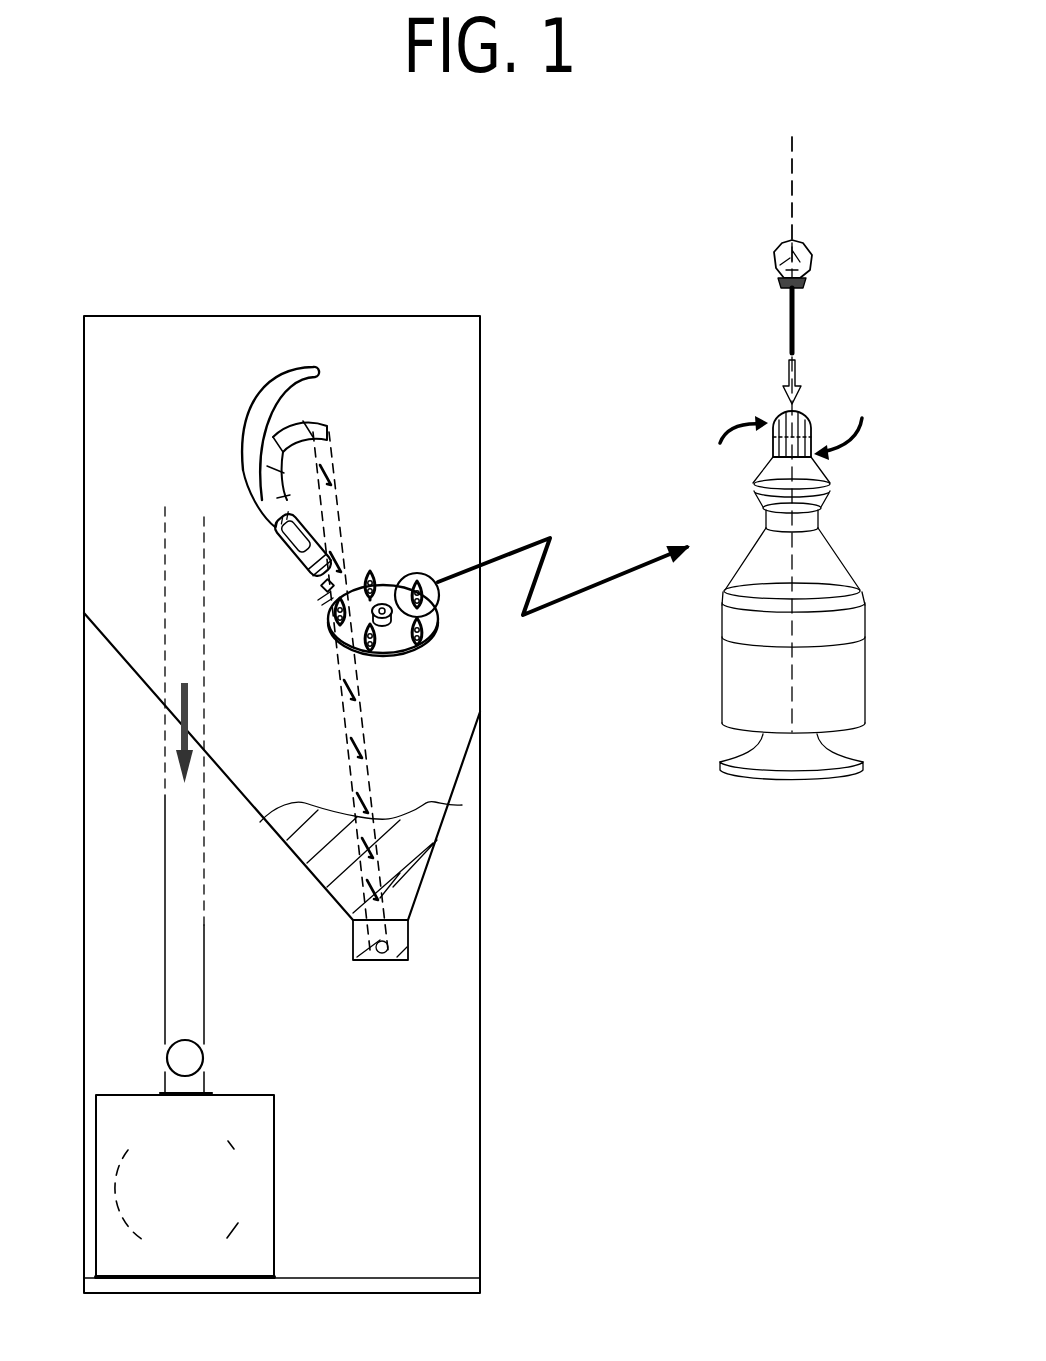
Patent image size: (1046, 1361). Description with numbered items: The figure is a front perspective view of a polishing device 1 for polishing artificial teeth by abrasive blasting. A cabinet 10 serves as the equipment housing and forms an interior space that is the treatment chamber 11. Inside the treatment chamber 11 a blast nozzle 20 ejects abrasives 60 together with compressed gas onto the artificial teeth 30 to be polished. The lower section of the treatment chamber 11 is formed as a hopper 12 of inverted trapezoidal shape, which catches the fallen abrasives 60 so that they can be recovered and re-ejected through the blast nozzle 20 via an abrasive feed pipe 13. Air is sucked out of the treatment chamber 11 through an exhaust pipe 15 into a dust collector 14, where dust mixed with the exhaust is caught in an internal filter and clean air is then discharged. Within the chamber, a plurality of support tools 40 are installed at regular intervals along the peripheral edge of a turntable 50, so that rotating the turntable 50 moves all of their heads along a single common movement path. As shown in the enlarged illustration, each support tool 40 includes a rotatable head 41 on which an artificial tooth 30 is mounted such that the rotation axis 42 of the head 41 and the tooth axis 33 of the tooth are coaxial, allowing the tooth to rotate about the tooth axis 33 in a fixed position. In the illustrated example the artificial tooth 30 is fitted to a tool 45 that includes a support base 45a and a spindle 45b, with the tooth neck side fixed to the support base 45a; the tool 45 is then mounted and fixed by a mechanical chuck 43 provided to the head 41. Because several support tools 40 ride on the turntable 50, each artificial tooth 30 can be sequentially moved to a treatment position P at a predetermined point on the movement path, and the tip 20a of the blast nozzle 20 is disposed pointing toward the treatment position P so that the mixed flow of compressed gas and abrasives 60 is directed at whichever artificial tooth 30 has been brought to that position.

The polishing device 1 is at (275, 241).
The cabinet 10 is at (481, 449).
The treatment chamber 11 is at (432, 408).
The hopper 12 is at (427, 880).
The abrasive feed pipe 13 is at (343, 715).
The dust collector 14 is at (274, 1168).
The exhaust pipe 15 is at (205, 913).
The blast nozzle 20 is at (293, 562).
The tip of the blast nozzle 20a is at (322, 590).
The treatment position P is at (327, 598).
The artificial tooth 30 is at (370, 573).
The tooth axis 33 is at (787, 155).
The support tool 40 is at (352, 557).
The head 41 is at (753, 480).
The rotation axis 42 is at (793, 548).
The mechanical chuck 43 is at (807, 422).
The tool 45 is at (851, 315).
The support base 45a is at (802, 285).
The spindle 45b is at (797, 325).
The turntable 50 is at (402, 665).
The abrasives 60 is at (462, 805).